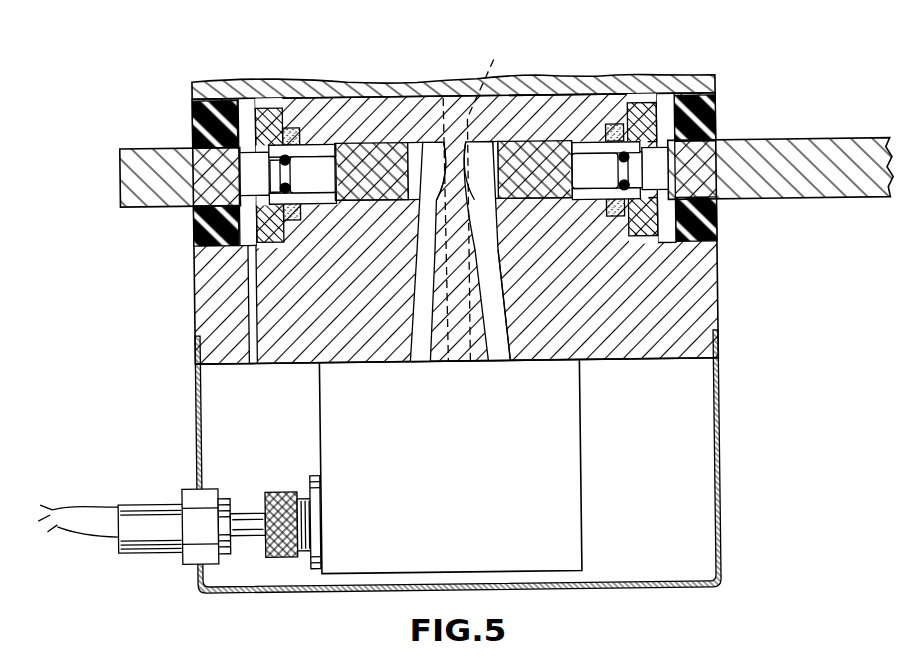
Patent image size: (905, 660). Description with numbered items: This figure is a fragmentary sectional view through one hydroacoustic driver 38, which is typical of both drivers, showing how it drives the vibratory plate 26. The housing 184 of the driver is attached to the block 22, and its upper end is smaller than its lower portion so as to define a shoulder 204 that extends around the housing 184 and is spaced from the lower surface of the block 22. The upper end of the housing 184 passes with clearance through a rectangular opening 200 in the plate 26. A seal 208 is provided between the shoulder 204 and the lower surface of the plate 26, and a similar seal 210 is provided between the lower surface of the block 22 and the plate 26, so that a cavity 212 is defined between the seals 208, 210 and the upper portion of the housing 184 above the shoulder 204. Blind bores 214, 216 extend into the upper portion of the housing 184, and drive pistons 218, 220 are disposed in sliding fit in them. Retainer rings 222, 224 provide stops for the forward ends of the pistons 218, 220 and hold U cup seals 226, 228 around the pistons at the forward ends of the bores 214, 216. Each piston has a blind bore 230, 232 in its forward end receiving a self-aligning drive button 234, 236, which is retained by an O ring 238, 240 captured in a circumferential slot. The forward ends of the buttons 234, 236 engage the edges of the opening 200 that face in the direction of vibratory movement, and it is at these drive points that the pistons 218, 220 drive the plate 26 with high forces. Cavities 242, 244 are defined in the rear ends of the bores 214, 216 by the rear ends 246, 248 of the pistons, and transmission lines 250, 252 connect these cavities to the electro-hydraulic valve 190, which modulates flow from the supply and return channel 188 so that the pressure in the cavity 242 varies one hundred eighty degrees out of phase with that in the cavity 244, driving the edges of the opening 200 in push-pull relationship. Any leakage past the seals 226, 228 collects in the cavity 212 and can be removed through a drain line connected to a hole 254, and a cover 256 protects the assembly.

The block 22 is at (718, 87).
The vibratory plate 26 is at (815, 144).
The hydroacoustic driver 38 is at (298, 362).
The housing member 184 is at (707, 303).
The return channel 188 is at (479, 198).
The electro-hydraulic valve 190 is at (578, 468).
The rectangular opening 200 is at (245, 148).
The shoulder 204 is at (272, 241).
The seal 208 is at (713, 126).
The seal 210 is at (718, 231).
The cavity 212 is at (244, 105).
The blind bore 214 is at (375, 142).
The blind bore 216 is at (549, 144).
The drive piston 218 is at (456, 304).
The drive piston 220 is at (534, 192).
The retainer ring 222 is at (273, 103).
The retainer ring 224 is at (658, 109).
The U cup seal 226 is at (292, 121).
The U cup seal 228 is at (652, 106).
The blind bore 230 is at (307, 157).
The blind bore 232 is at (617, 140).
The self-aligning drive button 234 is at (329, 191).
The self-aligning drive button 236 is at (588, 162).
The O ring 238 is at (290, 175).
The O ring 240 is at (621, 171).
The cavity 242 is at (437, 170).
The cavity 244 is at (485, 157).
The piston rear end 246 is at (382, 186).
The piston rear end 248 is at (502, 195).
The transmission line 250 is at (418, 358).
The transmission line 252 is at (498, 355).
The hole 254 is at (252, 310).
The cover 256 is at (719, 425).